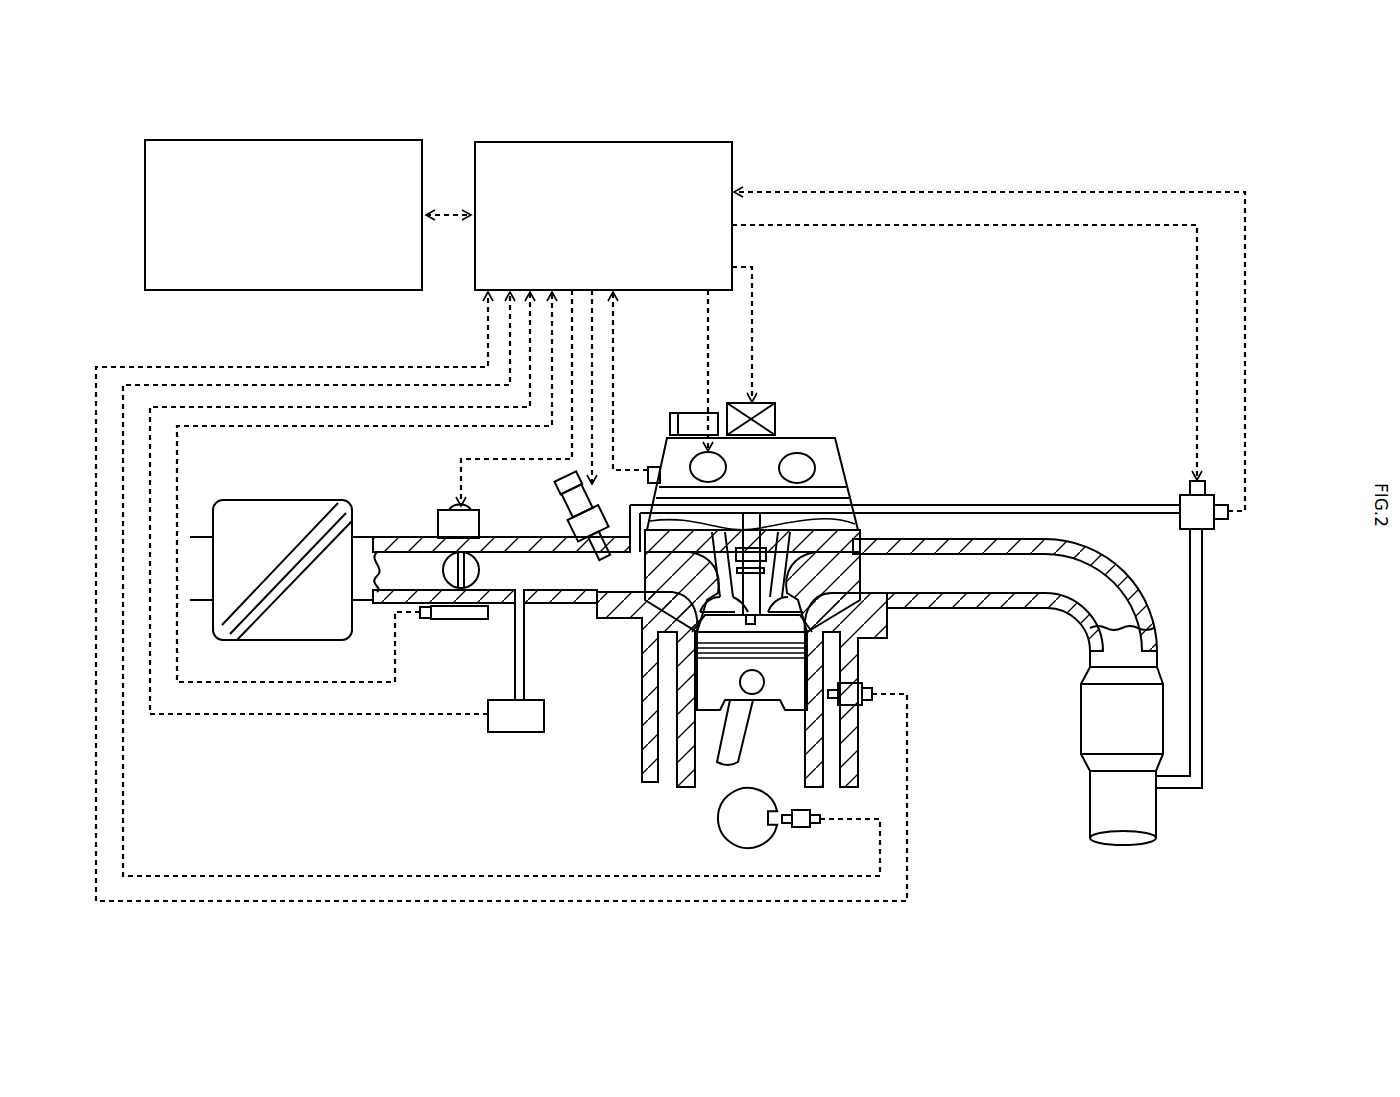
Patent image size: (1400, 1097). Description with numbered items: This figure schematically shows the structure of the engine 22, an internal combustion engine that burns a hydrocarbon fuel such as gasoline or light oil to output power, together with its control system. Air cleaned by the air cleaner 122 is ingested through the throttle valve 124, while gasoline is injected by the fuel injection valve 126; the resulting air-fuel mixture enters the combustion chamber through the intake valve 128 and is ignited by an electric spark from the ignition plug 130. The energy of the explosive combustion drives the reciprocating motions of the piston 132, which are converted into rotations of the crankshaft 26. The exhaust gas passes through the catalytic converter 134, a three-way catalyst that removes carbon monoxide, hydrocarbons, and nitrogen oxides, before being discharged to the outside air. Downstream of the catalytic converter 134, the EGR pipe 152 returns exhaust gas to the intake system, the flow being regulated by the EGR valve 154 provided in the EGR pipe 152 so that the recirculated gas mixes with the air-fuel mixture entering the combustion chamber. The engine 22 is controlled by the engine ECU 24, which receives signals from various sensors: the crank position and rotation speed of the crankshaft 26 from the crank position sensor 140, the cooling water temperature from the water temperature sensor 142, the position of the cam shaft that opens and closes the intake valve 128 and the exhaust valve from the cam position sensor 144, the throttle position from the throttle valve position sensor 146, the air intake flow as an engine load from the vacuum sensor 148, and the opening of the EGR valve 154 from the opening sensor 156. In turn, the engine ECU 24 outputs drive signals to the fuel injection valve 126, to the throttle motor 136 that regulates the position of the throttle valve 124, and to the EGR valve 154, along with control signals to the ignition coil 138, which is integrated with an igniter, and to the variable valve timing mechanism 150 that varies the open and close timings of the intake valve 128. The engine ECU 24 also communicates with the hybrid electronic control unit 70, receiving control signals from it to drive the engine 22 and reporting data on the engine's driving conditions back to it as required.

The engine 22 is at (867, 564).
The engine electronic control unit 24 is at (603, 142).
The crankshaft 26 is at (718, 816).
The hybrid electronic control unit 70 is at (283, 140).
The air cleaner 122 is at (283, 500).
The throttle valve 124 is at (447, 568).
The fuel injection valve 126 is at (580, 546).
The intake valve 128 is at (722, 612).
The ignition plug 130 is at (752, 600).
The piston 132 is at (715, 682).
The catalytic converter 134 is at (1095, 705).
The throttle motor 136 is at (440, 511).
The ignition coil 138 is at (775, 421).
The crank position sensor 140 is at (802, 828).
The water temperature sensor 142 is at (862, 684).
The cam position sensor 144 is at (648, 472).
The throttle valve position sensor 146 is at (460, 622).
The vacuum sensor 148 is at (519, 733).
The variable valve timing mechanism 150 is at (848, 471).
The EGR pipe 152 is at (1203, 637).
The EGR valve 154 is at (1180, 498).
The opening sensor 156 is at (1221, 522).